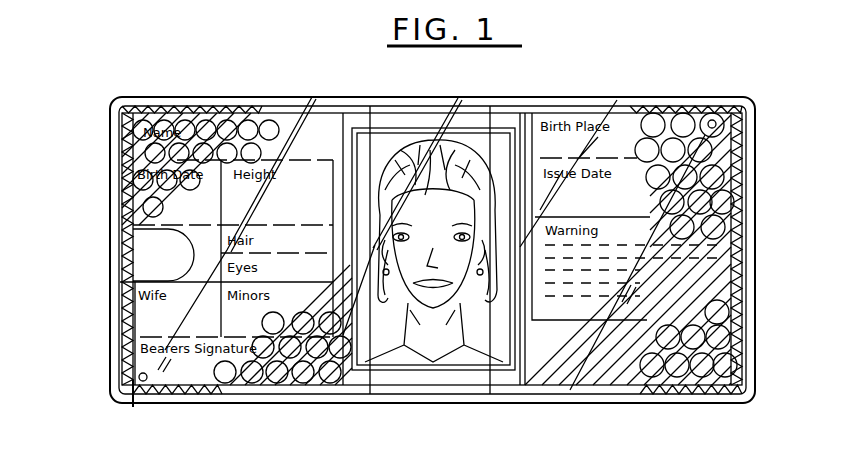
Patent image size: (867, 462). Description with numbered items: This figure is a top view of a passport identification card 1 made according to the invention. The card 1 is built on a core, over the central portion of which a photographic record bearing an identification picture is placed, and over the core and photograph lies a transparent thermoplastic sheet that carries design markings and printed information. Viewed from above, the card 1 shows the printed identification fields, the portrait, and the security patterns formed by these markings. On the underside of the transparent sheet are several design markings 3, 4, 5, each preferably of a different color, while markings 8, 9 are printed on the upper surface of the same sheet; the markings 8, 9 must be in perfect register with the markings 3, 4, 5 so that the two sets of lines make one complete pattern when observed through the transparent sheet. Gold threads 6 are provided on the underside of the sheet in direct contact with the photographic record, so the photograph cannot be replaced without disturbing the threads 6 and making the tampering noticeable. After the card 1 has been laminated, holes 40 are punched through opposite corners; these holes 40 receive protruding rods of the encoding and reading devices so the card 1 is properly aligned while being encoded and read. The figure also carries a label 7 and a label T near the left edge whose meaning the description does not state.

The passport identification card 1 is at (312, 97).
The design marking 3 is at (252, 98).
The design marking 4 is at (397, 98).
The design marking 5 is at (458, 98).
The gold threads 6 is at (360, 405).
The hatched pattern layer 7 is at (133, 202).
The marking 8 is at (733, 198).
The marking 9 is at (723, 280).
The holes 40 is at (133, 407).
The thumb tab T is at (137, 253).